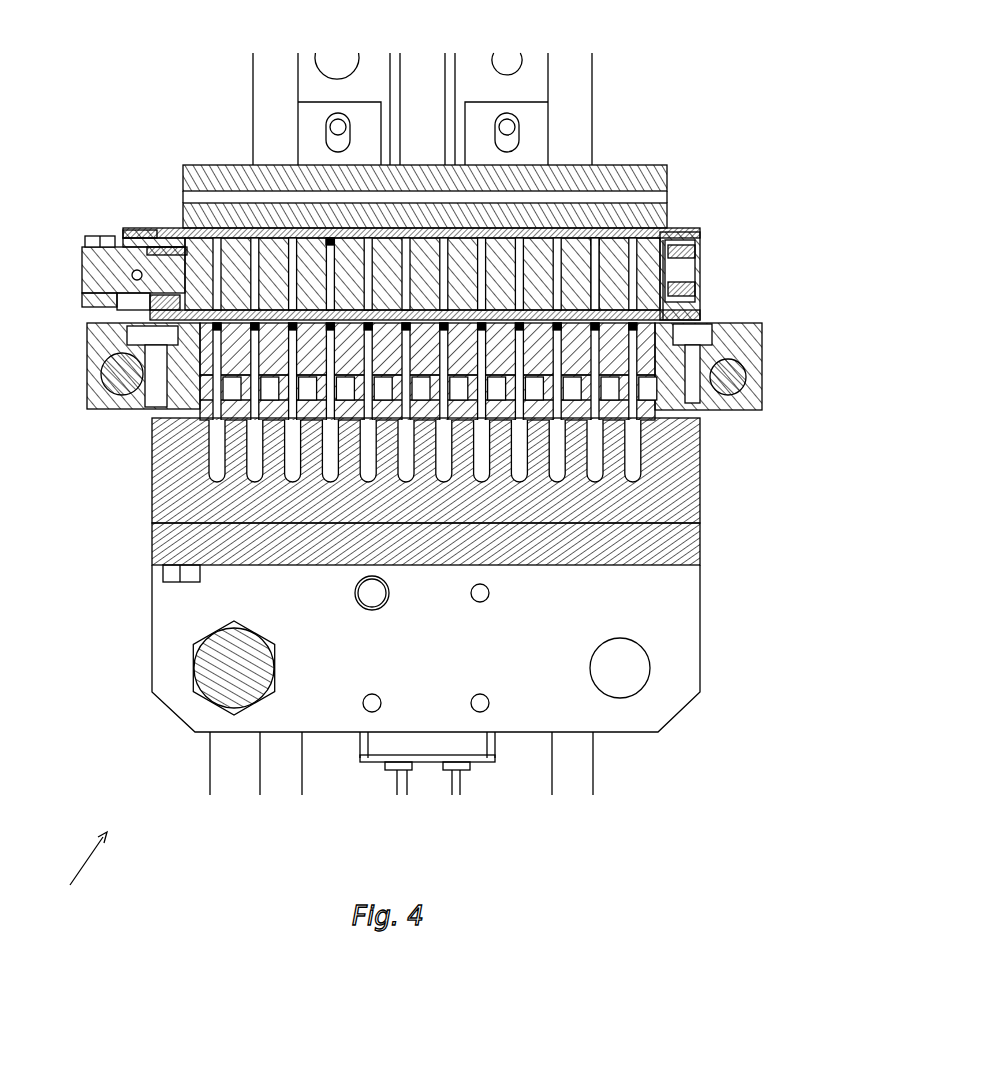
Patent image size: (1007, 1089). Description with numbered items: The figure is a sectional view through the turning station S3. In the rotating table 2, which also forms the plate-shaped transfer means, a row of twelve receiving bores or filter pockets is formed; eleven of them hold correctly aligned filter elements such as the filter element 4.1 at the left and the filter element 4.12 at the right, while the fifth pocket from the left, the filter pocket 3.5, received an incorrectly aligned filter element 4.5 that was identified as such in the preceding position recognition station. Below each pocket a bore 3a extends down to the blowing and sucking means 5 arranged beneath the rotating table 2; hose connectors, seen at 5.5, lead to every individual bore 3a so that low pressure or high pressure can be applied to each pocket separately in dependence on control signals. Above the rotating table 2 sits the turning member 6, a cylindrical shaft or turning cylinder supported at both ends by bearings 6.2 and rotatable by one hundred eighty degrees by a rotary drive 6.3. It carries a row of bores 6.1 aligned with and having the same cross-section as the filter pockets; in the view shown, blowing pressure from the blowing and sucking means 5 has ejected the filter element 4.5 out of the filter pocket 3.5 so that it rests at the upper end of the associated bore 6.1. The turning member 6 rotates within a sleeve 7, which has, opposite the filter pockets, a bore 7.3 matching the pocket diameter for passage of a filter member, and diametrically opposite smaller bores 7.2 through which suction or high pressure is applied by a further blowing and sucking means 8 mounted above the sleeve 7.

The rotating table 2 is at (643, 357).
The bore 3a is at (190, 336).
The filter pocket 3.5 is at (248, 368).
The filter element 4.1 is at (100, 360).
The filter element 4.5 is at (325, 237).
The filter element 4.12 is at (677, 290).
The blowing and sucking means 5 is at (652, 468).
The hose connector 5.5 is at (332, 442).
The turning member 6 is at (93, 275).
The bore 6.1 is at (213, 228).
The bearing 6.2 is at (145, 237).
The rotary drive 6.3 is at (83, 245).
The sleeve 7 is at (660, 230).
The bore 7.2 is at (560, 237).
The bore 7.3 is at (597, 300).
The blowing and sucking means 8 is at (668, 182).
The turning station S3 is at (76, 876).